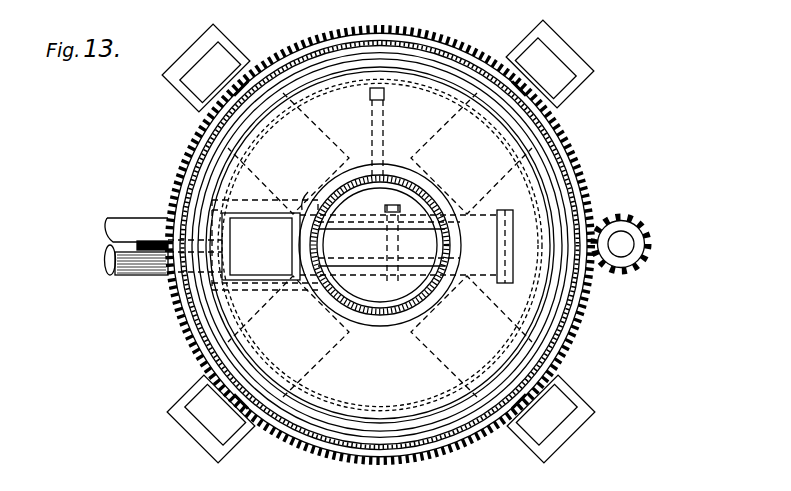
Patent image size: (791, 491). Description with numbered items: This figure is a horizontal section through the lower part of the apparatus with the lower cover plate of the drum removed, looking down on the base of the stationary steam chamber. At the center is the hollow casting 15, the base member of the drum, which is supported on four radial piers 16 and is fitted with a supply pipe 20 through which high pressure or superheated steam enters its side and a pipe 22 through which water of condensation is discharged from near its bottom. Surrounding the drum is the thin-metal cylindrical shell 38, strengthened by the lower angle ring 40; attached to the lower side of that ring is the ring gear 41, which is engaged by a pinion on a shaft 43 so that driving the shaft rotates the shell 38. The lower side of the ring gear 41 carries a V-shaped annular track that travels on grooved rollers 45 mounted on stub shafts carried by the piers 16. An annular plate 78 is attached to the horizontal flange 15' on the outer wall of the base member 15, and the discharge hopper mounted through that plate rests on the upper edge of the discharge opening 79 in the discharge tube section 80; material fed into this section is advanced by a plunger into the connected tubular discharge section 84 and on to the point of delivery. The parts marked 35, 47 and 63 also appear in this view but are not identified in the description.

The hollow casting 15 is at (380, 261).
The horizontal flange 15' is at (302, 182).
The radial piers 16 is at (234, 50).
The supply pipe 20 is at (382, 136).
The pipe 22 is at (370, 94).
The lever 35 is at (155, 250).
The cylindrical shell 38 is at (547, 178).
The lower angle ring 40 is at (188, 165).
The ring gear 41 is at (177, 308).
The shaft 43 is at (622, 246).
The grooved rollers 45 is at (267, 63).
The pinion 47 is at (648, 223).
The shaft 63 is at (362, 246).
The annular plate 78 is at (380, 245).
The discharge opening 79 is at (266, 245).
The discharge tube section 80 is at (371, 222).
The tubular discharge section 84 is at (132, 216).